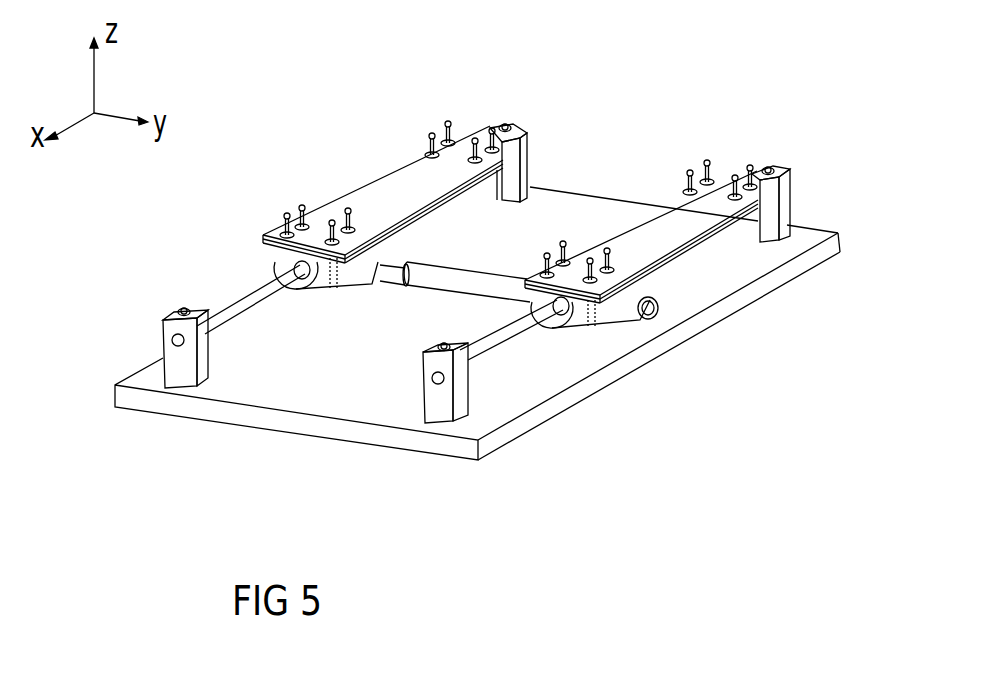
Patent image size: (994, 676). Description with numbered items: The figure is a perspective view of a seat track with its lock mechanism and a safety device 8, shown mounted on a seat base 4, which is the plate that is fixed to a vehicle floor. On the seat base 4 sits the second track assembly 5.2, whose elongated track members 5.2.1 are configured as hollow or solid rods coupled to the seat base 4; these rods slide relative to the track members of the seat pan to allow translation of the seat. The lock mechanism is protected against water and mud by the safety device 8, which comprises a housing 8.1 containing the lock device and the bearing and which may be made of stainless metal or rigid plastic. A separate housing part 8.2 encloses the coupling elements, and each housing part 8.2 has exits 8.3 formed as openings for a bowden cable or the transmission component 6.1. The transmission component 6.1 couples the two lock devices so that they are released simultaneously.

The seat base 4 is at (740, 300).
The second track assembly 5.2 is at (185, 292).
The elongated track members 5.2.1 is at (243, 303).
The transmission component 6.1 is at (479, 279).
The safety device 8 is at (552, 250).
The housing 8.1 is at (417, 170).
The housing part 8.2 is at (357, 287).
The exits 8.3 is at (648, 315).